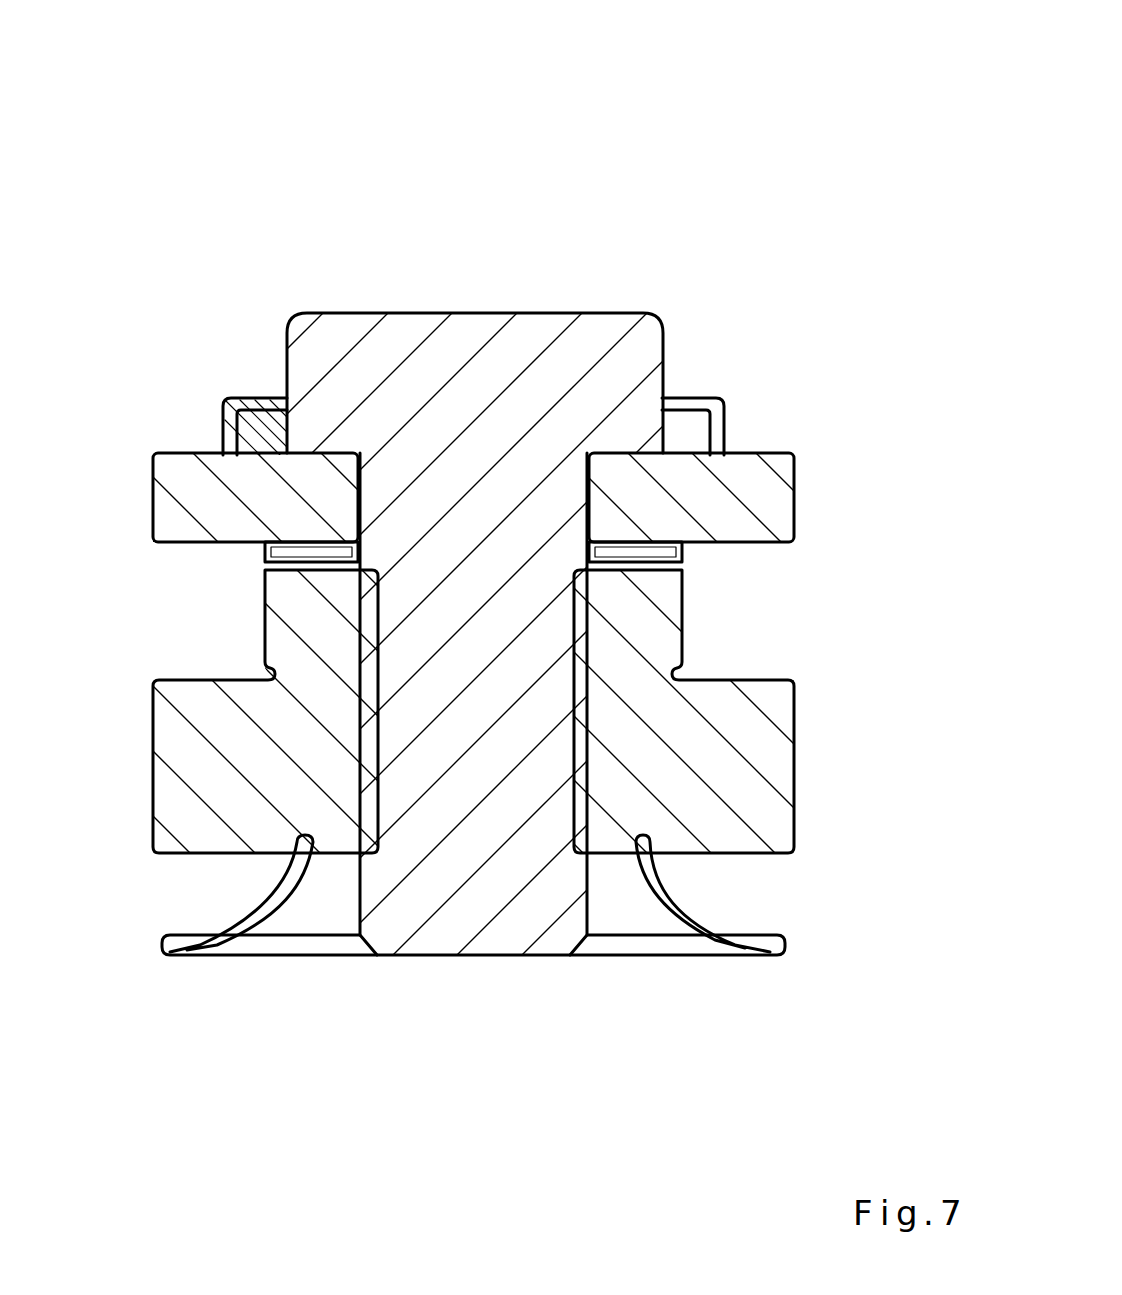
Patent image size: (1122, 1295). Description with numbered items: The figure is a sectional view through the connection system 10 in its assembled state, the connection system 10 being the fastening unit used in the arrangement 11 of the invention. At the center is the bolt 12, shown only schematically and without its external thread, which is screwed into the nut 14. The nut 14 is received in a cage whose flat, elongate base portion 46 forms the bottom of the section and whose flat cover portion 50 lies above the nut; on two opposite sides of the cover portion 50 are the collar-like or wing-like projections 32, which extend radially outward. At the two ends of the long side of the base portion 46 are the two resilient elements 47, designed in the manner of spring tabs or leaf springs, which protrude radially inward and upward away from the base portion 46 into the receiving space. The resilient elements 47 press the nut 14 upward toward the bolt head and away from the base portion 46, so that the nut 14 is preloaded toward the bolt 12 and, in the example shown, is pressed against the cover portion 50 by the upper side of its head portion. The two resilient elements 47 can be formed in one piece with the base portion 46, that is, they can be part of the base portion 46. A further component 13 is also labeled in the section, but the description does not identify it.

The arrangement 11 is at (742, 140).
The connection system 10 is at (701, 338).
The bolt 12 is at (515, 452).
The flange 13 is at (680, 523).
The projections 32 is at (258, 420).
The cover portion 50 is at (632, 545).
The nut 14 is at (190, 737).
The base portion 46 is at (612, 947).
The resilient elements 47 is at (297, 877).